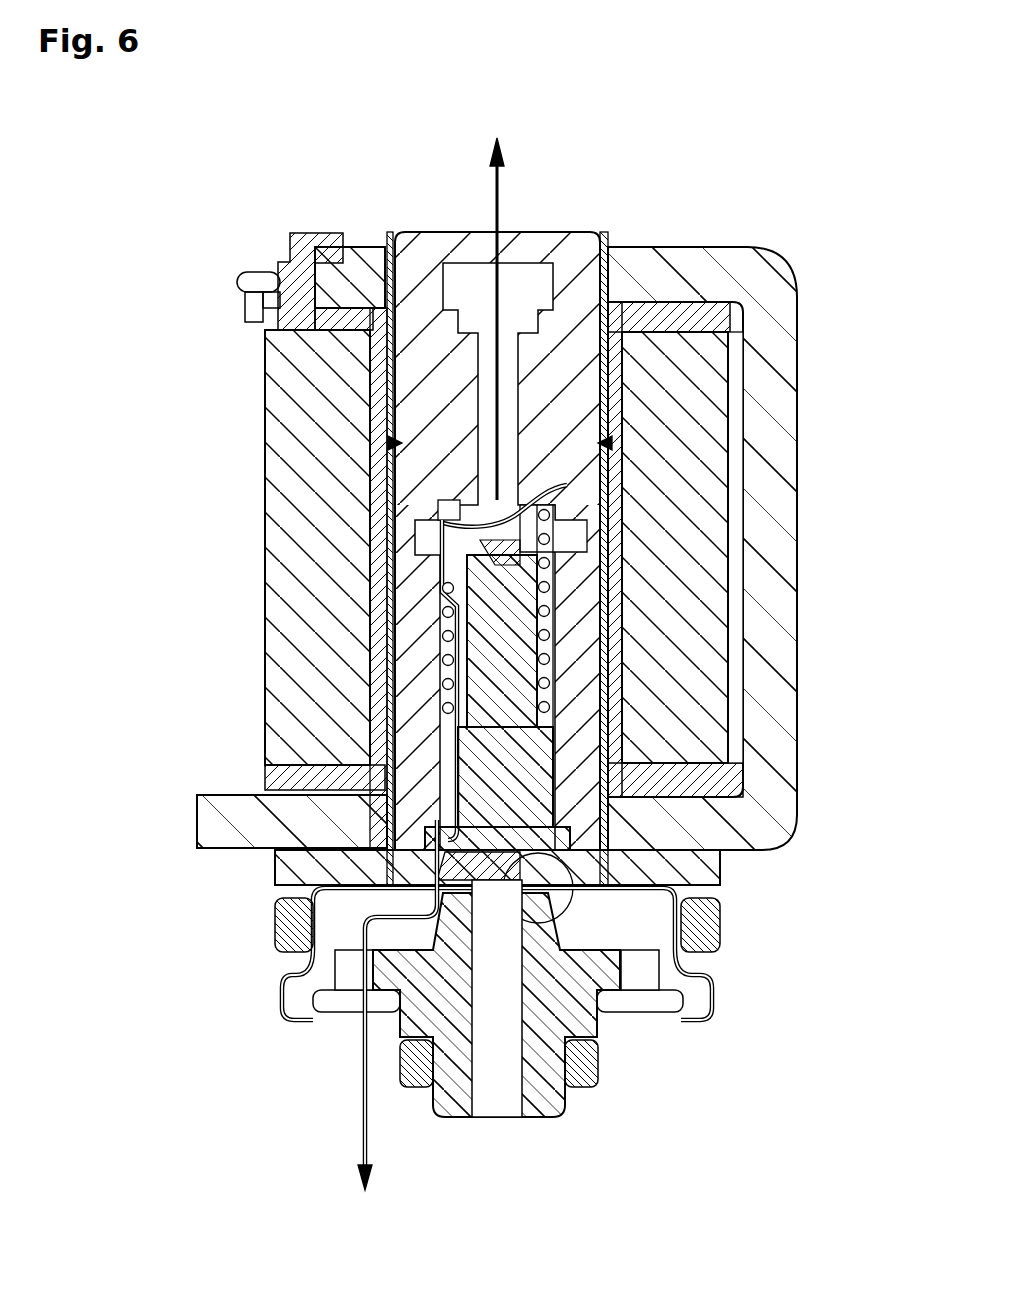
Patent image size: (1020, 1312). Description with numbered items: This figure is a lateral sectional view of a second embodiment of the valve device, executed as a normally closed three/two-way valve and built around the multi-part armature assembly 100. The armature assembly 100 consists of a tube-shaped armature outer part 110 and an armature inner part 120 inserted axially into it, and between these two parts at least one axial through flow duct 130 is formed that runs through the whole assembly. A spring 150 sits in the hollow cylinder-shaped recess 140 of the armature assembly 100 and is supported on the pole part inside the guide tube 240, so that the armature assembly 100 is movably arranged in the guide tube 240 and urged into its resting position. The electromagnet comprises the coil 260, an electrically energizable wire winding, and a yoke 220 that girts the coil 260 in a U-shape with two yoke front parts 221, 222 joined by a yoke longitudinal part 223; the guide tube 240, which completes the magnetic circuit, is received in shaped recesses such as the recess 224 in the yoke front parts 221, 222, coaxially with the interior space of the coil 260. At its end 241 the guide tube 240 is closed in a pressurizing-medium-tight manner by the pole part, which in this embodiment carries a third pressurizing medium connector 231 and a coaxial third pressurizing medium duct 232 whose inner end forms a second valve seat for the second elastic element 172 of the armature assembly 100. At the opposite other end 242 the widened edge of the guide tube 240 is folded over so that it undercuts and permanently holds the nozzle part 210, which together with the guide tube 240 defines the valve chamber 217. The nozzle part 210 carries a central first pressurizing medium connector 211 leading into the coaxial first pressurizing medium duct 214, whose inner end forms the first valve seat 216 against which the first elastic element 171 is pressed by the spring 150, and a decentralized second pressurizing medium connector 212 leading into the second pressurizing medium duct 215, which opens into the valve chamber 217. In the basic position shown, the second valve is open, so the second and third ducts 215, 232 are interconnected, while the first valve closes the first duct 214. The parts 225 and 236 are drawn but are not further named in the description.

The armature assembly 100 is at (400, 585).
The armature outer part 110 is at (590, 712).
The armature inner part 120 is at (530, 745).
The through flow duct 130 is at (448, 665).
The hollow cylinder-shaped recess 140 is at (560, 630).
The spring 150 is at (448, 632).
The first elastic element 171 is at (600, 888).
The second elastic element 172 is at (452, 543).
The nozzle part 210 is at (432, 1122).
The first pressurizing medium connector 211 is at (510, 1122).
The second pressurizing medium connector 212 is at (320, 1022).
The first pressurizing medium duct 214 is at (560, 1122).
The second pressurizing medium duct 215 is at (345, 975).
The first valve seat 216 is at (700, 926).
The valve chamber 217 is at (295, 926).
The yoke 220 is at (778, 350).
The yoke front part 221 is at (215, 822).
The yoke front part 222 is at (697, 262).
The yoke longitudinal part 223 is at (772, 442).
The recess 224 is at (523, 862).
The pole tube 225 is at (608, 275).
The third pressurizing medium connector 231 is at (520, 235).
The third pressurizing medium duct 232 is at (397, 415).
The spring seat 236 is at (575, 518).
The guide tube 240 is at (615, 650).
The end 241 is at (400, 485).
The other end 242 is at (718, 1010).
The coil 260 is at (715, 522).